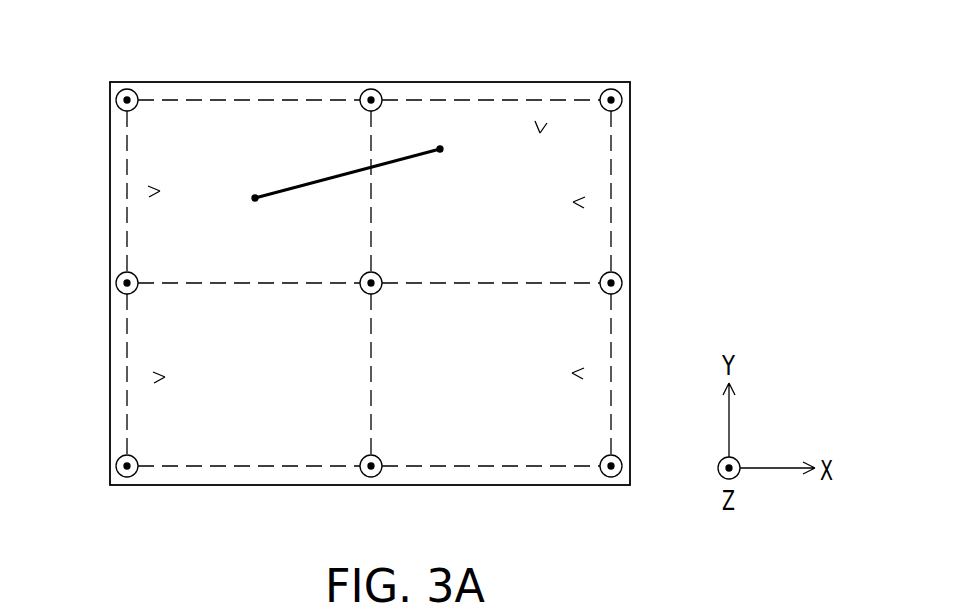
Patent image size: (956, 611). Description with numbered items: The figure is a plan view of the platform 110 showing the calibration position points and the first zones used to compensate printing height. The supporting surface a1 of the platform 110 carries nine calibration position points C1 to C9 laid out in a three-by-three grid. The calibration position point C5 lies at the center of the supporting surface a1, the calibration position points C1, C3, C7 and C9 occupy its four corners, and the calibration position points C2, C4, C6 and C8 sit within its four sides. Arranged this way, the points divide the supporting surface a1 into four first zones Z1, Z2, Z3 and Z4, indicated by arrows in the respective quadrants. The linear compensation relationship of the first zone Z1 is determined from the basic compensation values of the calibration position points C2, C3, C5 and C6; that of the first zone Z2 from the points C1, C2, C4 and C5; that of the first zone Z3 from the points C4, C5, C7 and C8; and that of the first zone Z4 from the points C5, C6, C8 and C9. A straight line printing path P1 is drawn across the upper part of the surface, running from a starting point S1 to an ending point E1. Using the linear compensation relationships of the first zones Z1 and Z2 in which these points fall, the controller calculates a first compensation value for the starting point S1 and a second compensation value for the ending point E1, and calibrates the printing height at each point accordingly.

The platform 110 is at (630, 122).
The calibration position point C1 is at (125, 88).
The calibration position point C2 is at (371, 88).
The calibration position point C3 is at (613, 88).
The calibration position point C4 is at (125, 271).
The calibration position point C5 is at (376, 273).
The calibration position point C6 is at (622, 283).
The calibration position point C7 is at (120, 473).
The calibration position point C8 is at (362, 474).
The calibration position point C9 is at (622, 466).
The starting point S1 is at (255, 198).
The ending point E1 is at (440, 149).
The straight line printing path P1 is at (337, 175).
The first zone Z1 is at (540, 133).
The first zone Z2 is at (160, 191).
The first zone Z3 is at (165, 377).
The first zone Z4 is at (572, 373).
The supporting surface a1 is at (573, 202).